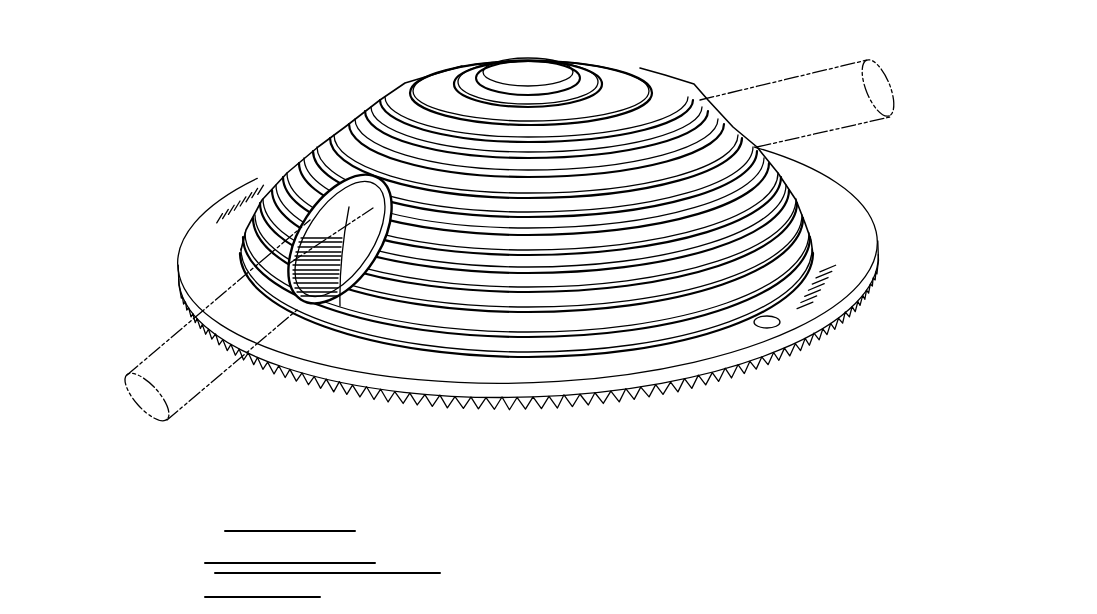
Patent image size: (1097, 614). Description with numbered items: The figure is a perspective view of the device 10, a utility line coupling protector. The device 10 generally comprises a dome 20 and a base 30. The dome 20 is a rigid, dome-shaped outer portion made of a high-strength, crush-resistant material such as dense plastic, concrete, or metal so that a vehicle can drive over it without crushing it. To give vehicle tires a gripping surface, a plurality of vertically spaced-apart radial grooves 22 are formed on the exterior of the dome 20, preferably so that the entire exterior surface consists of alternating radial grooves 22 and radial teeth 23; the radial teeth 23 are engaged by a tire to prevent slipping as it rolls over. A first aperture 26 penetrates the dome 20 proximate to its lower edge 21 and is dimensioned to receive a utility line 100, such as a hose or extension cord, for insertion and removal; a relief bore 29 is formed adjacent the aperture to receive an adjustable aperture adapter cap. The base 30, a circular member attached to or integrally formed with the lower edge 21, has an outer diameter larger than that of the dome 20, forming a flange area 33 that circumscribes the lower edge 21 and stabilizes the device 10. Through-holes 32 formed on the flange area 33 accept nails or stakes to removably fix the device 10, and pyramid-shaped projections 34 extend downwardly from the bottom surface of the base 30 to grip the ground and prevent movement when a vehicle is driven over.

The device 10 is at (176, 160).
The dome 20 is at (611, 67).
The lower edge 21 is at (367, 333).
The radial grooves 22 is at (385, 92).
The radial teeth 23 is at (343, 128).
The first aperture 26 is at (298, 176).
The relief bores 29 is at (291, 324).
The base 30 is at (860, 235).
The through-holes 32 is at (773, 330).
The flange area 33 is at (560, 380).
The pyramid-shaped projections 34 is at (690, 383).
The utility line 100 is at (829, 56).